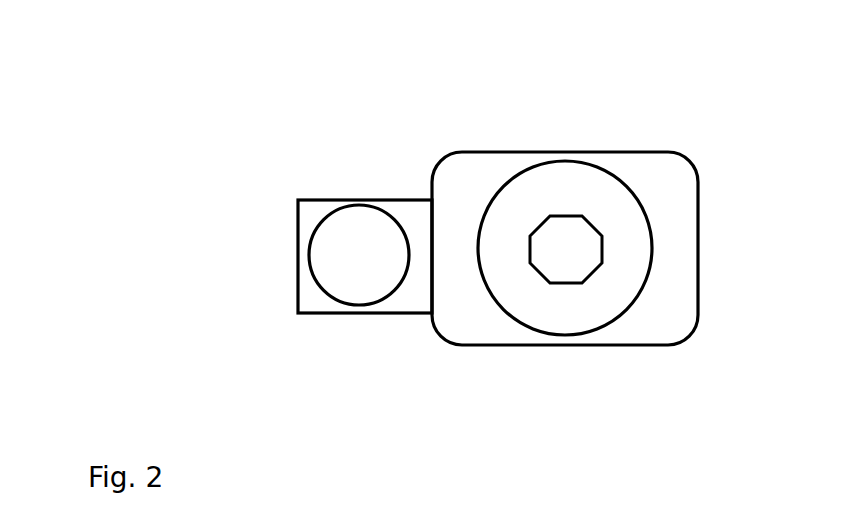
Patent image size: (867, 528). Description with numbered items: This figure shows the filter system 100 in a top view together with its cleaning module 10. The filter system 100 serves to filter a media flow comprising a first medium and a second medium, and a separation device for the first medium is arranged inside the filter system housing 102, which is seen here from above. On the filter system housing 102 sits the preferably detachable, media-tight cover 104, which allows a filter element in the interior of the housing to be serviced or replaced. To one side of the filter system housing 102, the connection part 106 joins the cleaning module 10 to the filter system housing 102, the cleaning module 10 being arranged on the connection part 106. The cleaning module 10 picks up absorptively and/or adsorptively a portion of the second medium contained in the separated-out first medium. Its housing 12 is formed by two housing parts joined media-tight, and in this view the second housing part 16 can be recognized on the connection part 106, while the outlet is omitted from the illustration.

The filter system 100 is at (695, 116).
The filter system housing 102 is at (699, 288).
The cover 104 is at (648, 210).
The connection part 106 is at (298, 305).
The cleaning module 10 is at (329, 210).
The housing 12 is at (364, 205).
The second housing part 16 is at (359, 255).